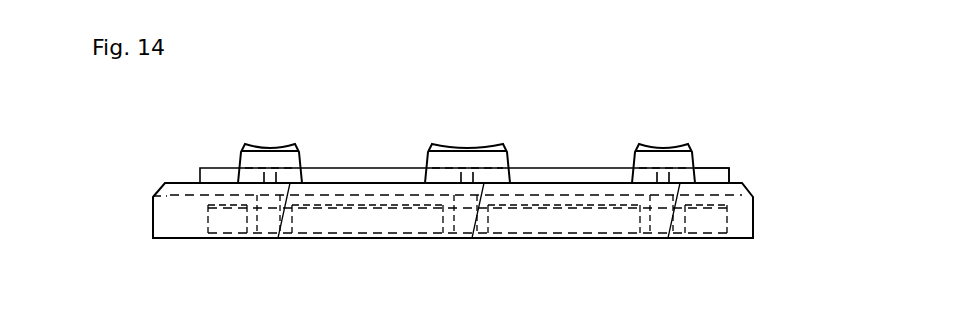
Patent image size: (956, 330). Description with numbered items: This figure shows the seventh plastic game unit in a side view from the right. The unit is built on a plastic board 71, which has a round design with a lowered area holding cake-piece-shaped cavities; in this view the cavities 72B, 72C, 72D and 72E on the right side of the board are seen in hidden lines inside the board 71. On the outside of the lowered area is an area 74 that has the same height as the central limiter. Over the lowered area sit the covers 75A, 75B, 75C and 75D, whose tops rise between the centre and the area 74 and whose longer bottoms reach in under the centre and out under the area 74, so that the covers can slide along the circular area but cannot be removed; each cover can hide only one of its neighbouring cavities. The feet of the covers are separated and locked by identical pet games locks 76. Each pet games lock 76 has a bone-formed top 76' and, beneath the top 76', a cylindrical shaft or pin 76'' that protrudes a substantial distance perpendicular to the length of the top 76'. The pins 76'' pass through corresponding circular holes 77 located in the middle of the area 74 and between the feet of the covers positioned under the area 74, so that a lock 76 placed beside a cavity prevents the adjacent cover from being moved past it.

The plastic board 71 is at (152, 222).
The cavity 72B is at (697, 220).
The cavity 72C is at (565, 223).
The cavity 72D is at (357, 222).
The cavity 72E is at (220, 222).
The area 74 is at (195, 181).
The cover 75A is at (713, 175).
The cover 75B is at (578, 175).
The cover 75C is at (385, 175).
The cover 75D is at (223, 175).
The pet games lock 76 is at (486, 109).
The top 76' is at (519, 129).
The cylindrical shaft or pin 76'' is at (442, 250).
The circular hole 77 is at (278, 238).